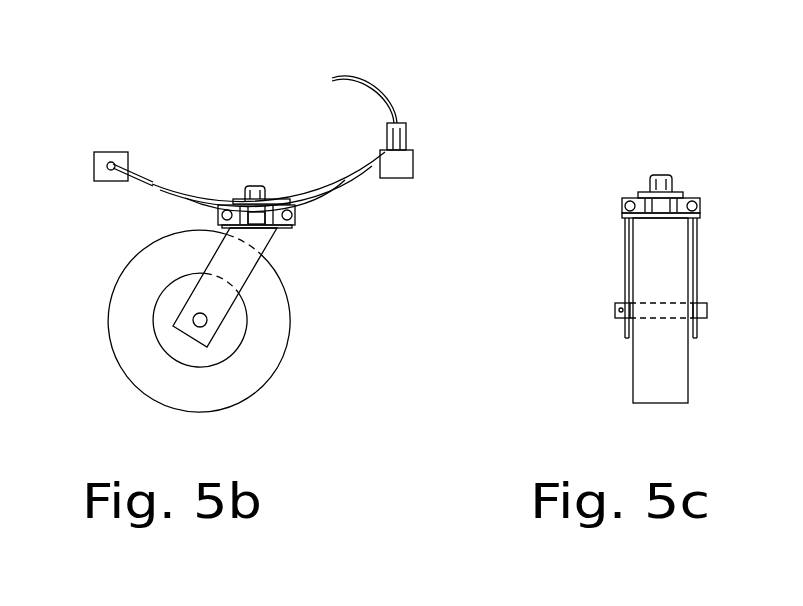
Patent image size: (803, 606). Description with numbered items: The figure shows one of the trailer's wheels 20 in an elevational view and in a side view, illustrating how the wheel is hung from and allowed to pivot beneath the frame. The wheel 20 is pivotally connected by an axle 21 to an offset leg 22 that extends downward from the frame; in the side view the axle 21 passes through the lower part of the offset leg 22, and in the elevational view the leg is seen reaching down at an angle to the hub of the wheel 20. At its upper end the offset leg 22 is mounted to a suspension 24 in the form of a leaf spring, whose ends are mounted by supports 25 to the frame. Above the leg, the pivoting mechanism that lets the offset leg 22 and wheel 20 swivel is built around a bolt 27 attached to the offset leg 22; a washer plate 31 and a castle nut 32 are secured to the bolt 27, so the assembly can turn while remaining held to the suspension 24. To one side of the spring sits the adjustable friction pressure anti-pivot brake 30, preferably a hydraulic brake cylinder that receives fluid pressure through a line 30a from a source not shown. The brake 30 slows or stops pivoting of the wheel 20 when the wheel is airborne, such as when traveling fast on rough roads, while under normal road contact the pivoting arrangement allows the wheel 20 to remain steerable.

In FIG. 5B, the wheel 20 is at (268, 372).
In FIG. 5C, the wheel 20 is at (680, 378).
In FIG. 5B, the axle 21 is at (205, 316).
In FIG. 5C, the axle 21 is at (705, 305).
In FIG. 5B, the offset leg 22 is at (252, 258).
In FIG. 5C, the offset leg 22 is at (697, 277).
In FIG. 5B, the suspension 24 is at (152, 183).
In FIG. 5B, the supports 25 is at (101, 170).
In FIG. 5B, the bolt 27 is at (262, 187).
In FIG. 5C, the bolt 27 is at (662, 173).
In FIG. 5B, the adjustable friction pressure anti-pivot brake 30 is at (398, 129).
In FIG. 5B, the line 30a is at (349, 75).
In FIG. 5B, the washer plate 31 is at (288, 197).
In FIG. 5B, the castle nut 32 is at (247, 200).